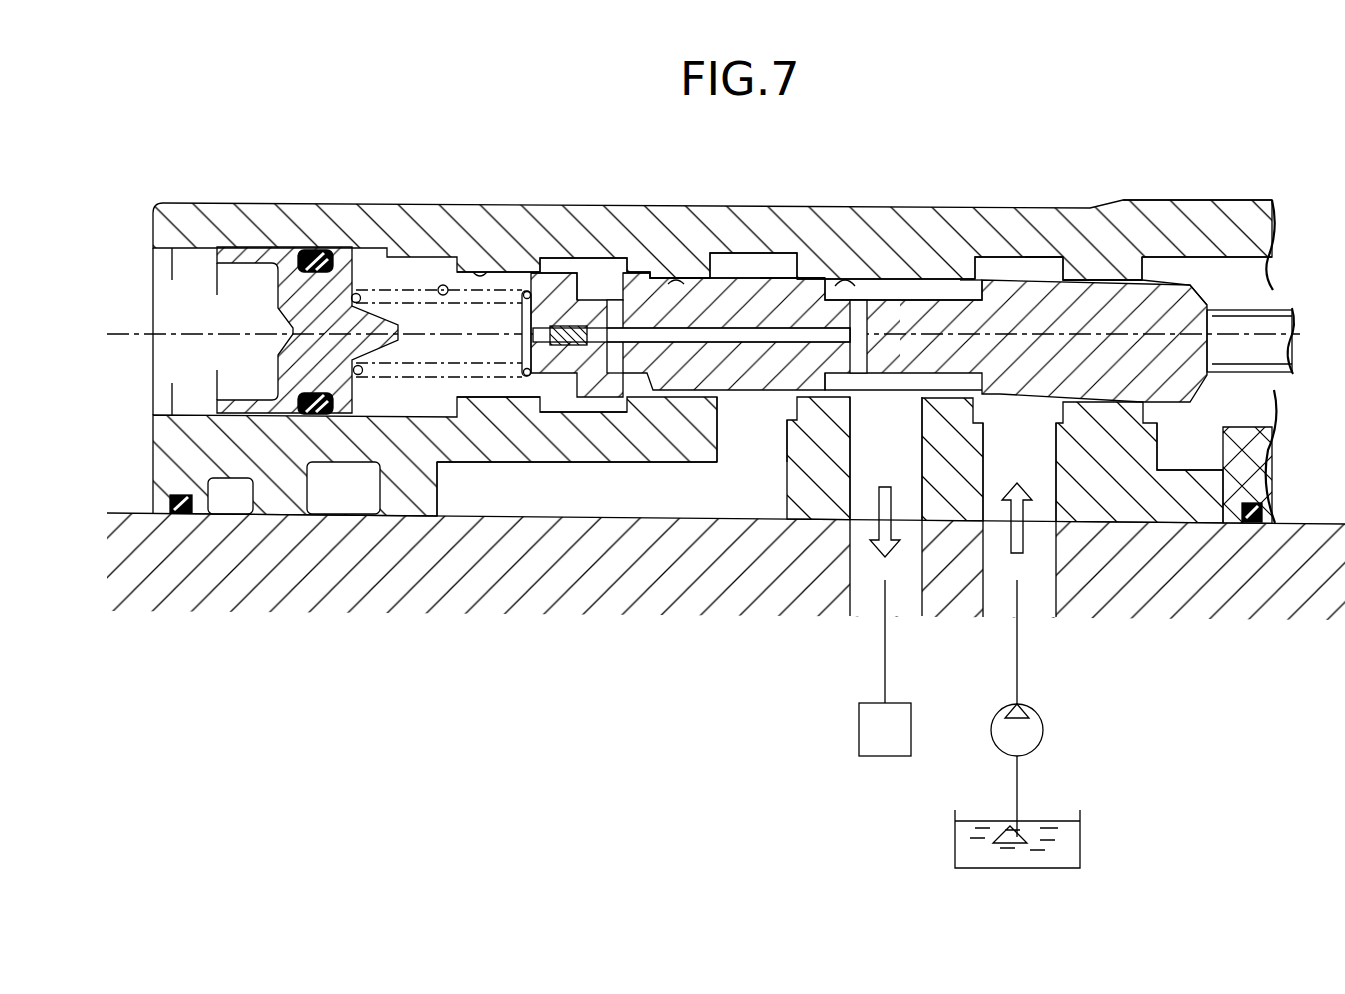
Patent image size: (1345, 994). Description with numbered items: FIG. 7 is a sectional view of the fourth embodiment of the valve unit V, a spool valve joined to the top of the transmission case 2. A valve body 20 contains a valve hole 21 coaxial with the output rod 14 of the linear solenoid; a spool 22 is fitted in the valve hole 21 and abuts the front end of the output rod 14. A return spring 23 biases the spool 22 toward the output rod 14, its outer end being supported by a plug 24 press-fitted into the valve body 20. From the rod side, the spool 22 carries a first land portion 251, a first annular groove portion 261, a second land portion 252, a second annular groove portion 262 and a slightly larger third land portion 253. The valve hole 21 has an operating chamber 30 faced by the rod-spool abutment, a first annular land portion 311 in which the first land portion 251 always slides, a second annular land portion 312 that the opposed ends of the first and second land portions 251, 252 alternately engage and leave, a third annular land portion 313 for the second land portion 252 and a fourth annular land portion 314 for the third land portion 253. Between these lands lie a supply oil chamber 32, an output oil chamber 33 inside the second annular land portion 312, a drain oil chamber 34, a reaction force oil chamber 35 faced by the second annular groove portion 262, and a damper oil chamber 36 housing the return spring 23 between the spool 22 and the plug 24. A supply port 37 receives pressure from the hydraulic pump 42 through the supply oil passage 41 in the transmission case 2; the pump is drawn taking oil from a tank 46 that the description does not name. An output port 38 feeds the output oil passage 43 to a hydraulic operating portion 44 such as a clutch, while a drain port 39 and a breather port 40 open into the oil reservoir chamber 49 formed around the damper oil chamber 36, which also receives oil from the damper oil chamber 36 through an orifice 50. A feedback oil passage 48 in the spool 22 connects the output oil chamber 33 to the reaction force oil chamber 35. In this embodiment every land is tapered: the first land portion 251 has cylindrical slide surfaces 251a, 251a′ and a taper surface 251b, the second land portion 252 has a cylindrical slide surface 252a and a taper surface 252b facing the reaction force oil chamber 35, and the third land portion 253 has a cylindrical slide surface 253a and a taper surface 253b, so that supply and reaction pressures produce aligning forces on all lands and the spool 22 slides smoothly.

The transmission case 2 is at (1302, 528).
The output rod 14 is at (1268, 359).
The valve body 20 is at (1248, 232).
The valve hole 21 is at (880, 280).
The spool 22 is at (1104, 359).
The return spring 23 is at (360, 372).
The plug 24 is at (280, 250).
The operating chamber 30 is at (1256, 297).
The supply oil chamber 32 is at (1010, 260).
The output oil chamber 33 is at (884, 392).
The drain oil chamber 34 is at (728, 270).
The reaction force oil chamber 35 is at (600, 262).
The damper oil chamber 36 is at (372, 258).
The supply port 37 is at (1080, 470).
The output port 38 is at (935, 463).
The drain port 39 is at (718, 446).
The breather port 40 is at (1222, 448).
The supply oil passage 41 is at (983, 600).
The hydraulic pump 42 is at (1042, 712).
The output oil passage 43 is at (848, 600).
The hydraulic operating portion 44 is at (906, 747).
The oil reservoir 46 is at (1082, 842).
The feedback oil passage 48 is at (749, 344).
The oil reservoir chamber 49 is at (1202, 495).
The orifice 50 is at (438, 288).
The first land portion 251 is at (1118, 280).
The cylindrical slide surface 251a is at (1182, 262).
The cylindrical slide surface 251a′ is at (967, 280).
The taper surface 251b is at (1033, 257).
The second land portion 252 is at (755, 272).
The cylindrical slide surface 252a is at (782, 272).
The taper surface 252b is at (640, 270).
The third land portion 253 is at (508, 272).
The cylindrical slide surface 253a is at (485, 420).
The taper surface 253b is at (566, 412).
The first annular groove portion 261 is at (936, 300).
The second annular groove portion 262 is at (640, 292).
The first annular land portion 311 is at (1094, 280).
The second annular land portion 312 is at (837, 280).
The third annular land portion 313 is at (692, 280).
The fourth annular land portion 314 is at (472, 270).
The valve unit V is at (1232, 199).